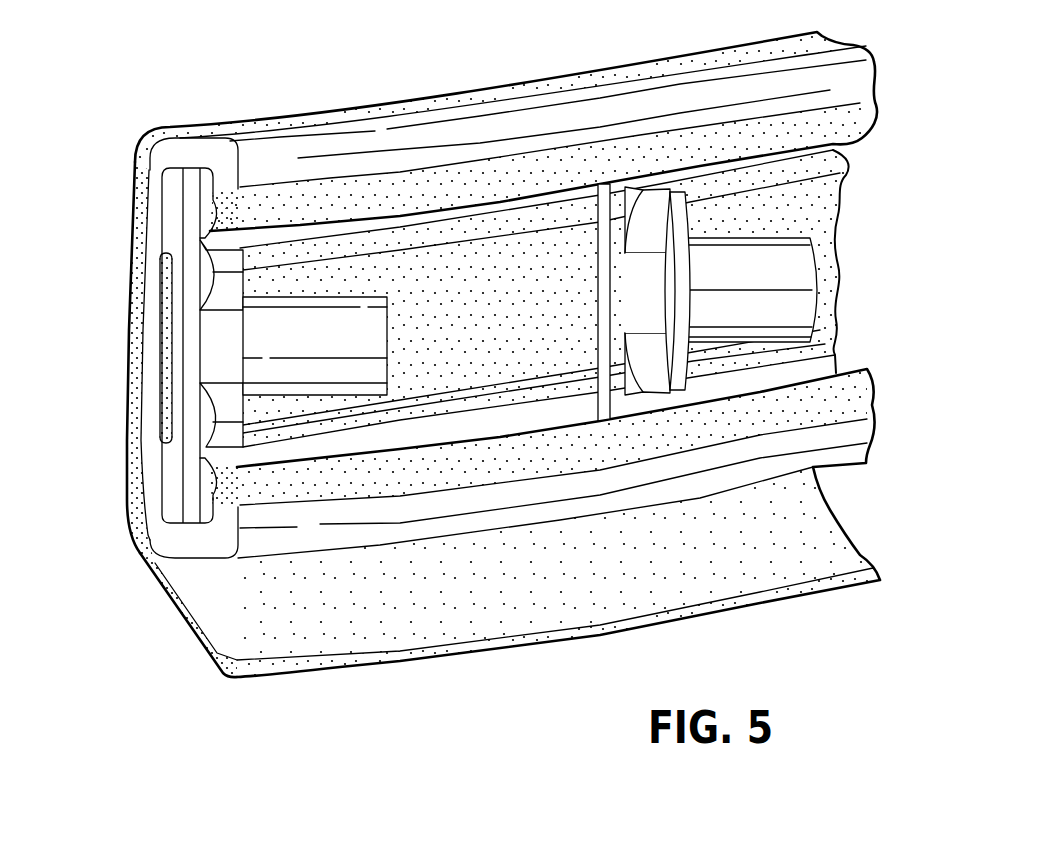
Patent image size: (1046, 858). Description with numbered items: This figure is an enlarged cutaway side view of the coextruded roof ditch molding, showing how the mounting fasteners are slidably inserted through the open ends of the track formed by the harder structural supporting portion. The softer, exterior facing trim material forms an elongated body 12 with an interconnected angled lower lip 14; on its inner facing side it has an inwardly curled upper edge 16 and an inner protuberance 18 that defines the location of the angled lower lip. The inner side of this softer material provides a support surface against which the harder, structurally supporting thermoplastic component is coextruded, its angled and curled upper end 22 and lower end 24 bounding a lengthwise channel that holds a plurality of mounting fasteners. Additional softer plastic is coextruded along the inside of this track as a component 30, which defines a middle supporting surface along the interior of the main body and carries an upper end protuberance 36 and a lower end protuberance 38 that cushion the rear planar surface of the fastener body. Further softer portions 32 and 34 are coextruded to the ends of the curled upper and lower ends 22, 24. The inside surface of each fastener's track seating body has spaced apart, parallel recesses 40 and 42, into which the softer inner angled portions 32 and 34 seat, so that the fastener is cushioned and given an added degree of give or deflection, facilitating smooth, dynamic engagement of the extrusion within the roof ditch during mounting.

The elongated body 12 is at (148, 352).
The angled lower lip 14 is at (200, 637).
The inwardly curled upper edge 16 is at (160, 127).
The inner protuberance 18 is at (170, 562).
The upper end 22 is at (200, 150).
The lower end 24 is at (192, 552).
The softer plastic component 30 is at (160, 367).
The additional softer portion 32 is at (212, 207).
The additional softer portion 34 is at (222, 483).
The upper end protuberance 36 is at (160, 258).
The lower end protuberance 38 is at (160, 440).
The recess 40 is at (200, 228).
The recess 42 is at (197, 472).